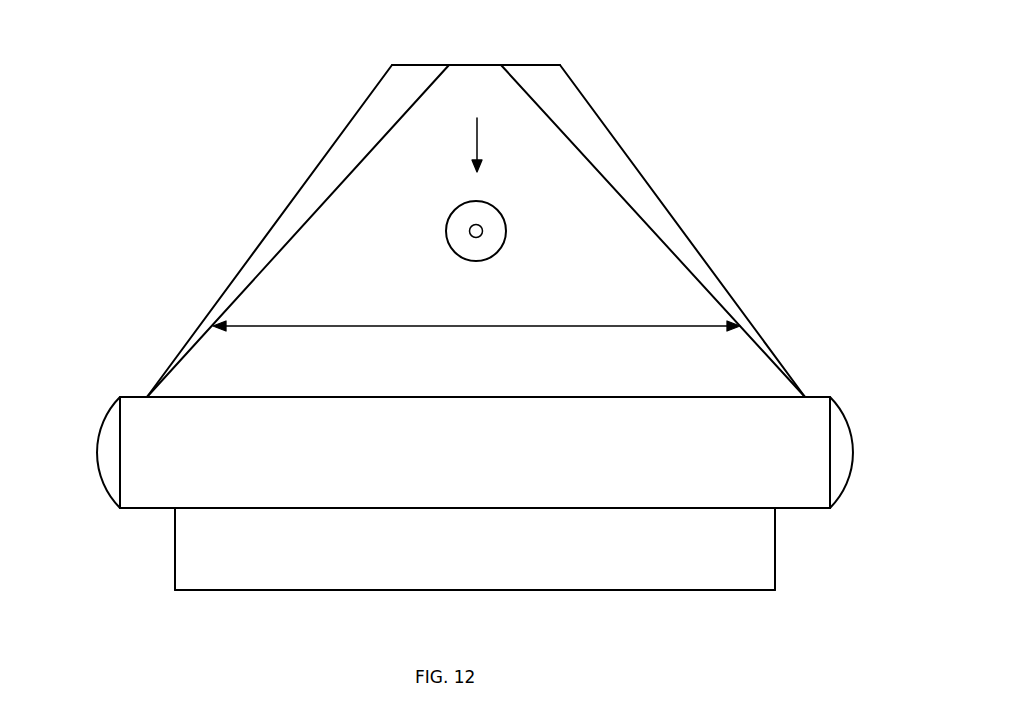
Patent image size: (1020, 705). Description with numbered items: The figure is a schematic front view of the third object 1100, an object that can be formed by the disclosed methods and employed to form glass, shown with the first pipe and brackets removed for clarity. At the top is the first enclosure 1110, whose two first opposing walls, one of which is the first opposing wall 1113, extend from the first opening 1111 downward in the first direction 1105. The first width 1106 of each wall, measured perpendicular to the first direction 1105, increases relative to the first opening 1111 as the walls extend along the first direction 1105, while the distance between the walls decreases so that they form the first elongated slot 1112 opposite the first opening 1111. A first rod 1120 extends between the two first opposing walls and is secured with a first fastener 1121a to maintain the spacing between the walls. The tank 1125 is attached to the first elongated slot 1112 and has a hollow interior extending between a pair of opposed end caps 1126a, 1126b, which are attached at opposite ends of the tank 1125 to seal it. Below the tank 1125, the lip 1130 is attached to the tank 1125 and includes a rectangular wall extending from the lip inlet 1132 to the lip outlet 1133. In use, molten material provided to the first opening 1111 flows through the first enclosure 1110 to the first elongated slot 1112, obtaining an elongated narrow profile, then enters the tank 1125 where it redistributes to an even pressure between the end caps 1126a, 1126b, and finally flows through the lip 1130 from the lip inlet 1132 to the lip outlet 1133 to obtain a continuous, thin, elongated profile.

The third object 1100 is at (760, 104).
The first direction 1105 is at (477, 135).
The first width 1106 is at (465, 325).
The first enclosure 1110 is at (349, 138).
The first opening 1111 is at (420, 65).
The first elongated slot 1112 is at (345, 396).
The first opposing wall 1113 is at (643, 233).
The first rod 1120 is at (469, 232).
The first fastener 1121a is at (461, 218).
The tank 1125 is at (143, 502).
The end cap 1126a is at (120, 409).
The end cap 1126b is at (832, 410).
The lip 1130 is at (771, 572).
The lip inlet 1132 is at (509, 510).
The lip outlet 1133 is at (352, 591).